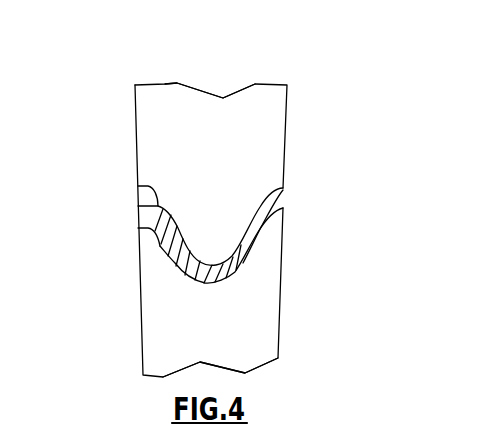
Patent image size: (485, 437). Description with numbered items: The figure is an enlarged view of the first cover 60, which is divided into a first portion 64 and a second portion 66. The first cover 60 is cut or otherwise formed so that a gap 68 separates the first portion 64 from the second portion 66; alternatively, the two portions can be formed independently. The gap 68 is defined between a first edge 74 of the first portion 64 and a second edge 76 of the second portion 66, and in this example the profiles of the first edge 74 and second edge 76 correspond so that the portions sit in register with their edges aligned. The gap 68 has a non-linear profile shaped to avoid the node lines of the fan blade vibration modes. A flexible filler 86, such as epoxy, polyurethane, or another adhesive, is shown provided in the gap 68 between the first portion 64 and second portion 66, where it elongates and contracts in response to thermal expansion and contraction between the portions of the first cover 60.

The first cover 60 is at (145, 53).
The first portion 64 is at (262, 137).
The second portion 66 is at (263, 305).
The gap 68 is at (283, 196).
The first edge 74 is at (143, 187).
The second edge 76 is at (142, 250).
The filler 86 is at (273, 207).